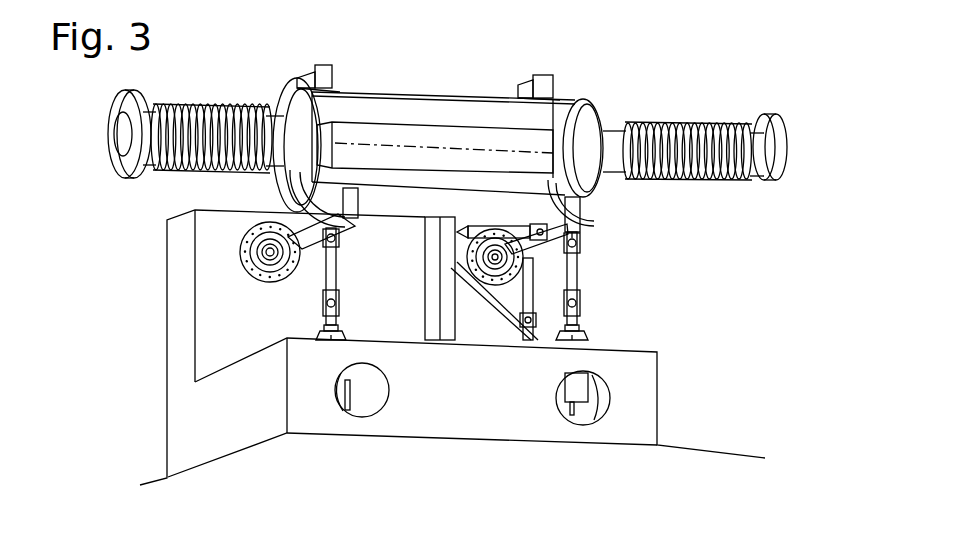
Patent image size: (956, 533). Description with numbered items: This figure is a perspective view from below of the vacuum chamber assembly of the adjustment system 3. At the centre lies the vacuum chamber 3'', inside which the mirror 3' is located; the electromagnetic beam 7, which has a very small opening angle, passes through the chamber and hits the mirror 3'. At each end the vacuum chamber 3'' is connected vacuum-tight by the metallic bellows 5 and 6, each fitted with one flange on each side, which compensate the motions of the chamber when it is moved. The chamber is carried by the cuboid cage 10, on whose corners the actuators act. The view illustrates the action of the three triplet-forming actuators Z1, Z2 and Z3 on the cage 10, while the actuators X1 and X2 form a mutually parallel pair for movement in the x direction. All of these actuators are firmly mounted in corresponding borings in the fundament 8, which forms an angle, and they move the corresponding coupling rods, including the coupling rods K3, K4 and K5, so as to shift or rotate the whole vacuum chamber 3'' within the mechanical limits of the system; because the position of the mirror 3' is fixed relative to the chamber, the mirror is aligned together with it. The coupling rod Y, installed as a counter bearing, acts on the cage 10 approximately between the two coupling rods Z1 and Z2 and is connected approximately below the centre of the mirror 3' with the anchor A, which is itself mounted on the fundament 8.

The adjustment system 3 is at (438, 113).
The mirror 3' is at (435, 117).
The vacuum chamber 3'' is at (443, 62).
The metallic bellows 5 is at (210, 102).
The metallic bellows 6 is at (673, 123).
The electromagnetic beam 7 is at (451, 145).
The fundament 8 is at (183, 402).
The cuboid cage 10 is at (328, 65).
The anchor A is at (432, 298).
The actuator X1 is at (240, 243).
The actuator X2 is at (486, 284).
The coupling rod K3 is at (531, 287).
The coupling rod K4 is at (578, 268).
The coupling rod K5 is at (331, 270).
The actuator Z1 is at (575, 300).
The actuator Z2 is at (600, 340).
The actuator Z3 is at (313, 337).